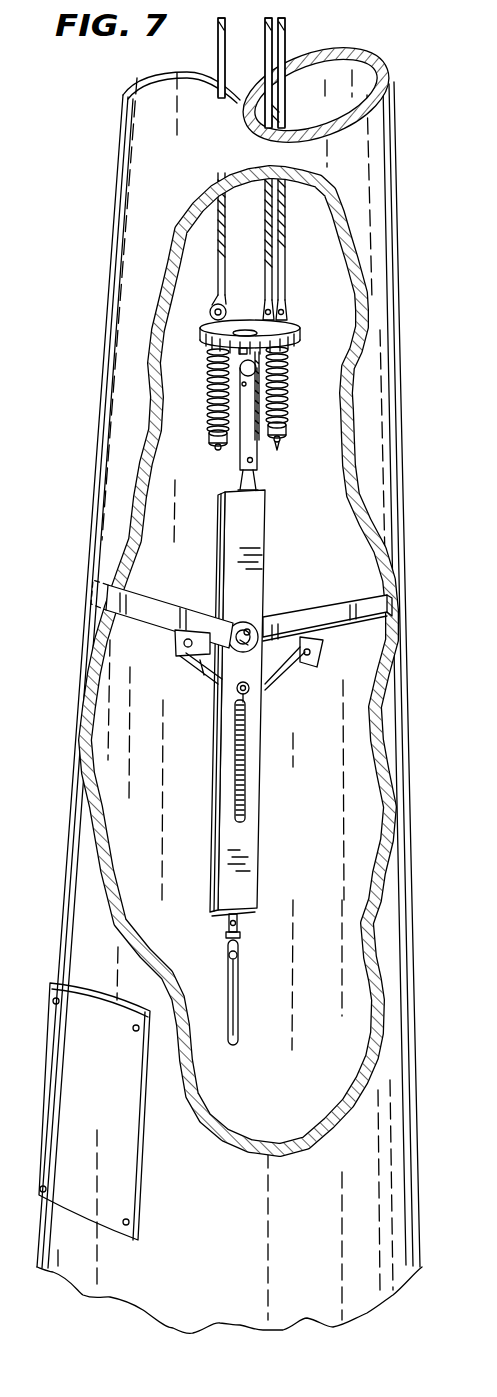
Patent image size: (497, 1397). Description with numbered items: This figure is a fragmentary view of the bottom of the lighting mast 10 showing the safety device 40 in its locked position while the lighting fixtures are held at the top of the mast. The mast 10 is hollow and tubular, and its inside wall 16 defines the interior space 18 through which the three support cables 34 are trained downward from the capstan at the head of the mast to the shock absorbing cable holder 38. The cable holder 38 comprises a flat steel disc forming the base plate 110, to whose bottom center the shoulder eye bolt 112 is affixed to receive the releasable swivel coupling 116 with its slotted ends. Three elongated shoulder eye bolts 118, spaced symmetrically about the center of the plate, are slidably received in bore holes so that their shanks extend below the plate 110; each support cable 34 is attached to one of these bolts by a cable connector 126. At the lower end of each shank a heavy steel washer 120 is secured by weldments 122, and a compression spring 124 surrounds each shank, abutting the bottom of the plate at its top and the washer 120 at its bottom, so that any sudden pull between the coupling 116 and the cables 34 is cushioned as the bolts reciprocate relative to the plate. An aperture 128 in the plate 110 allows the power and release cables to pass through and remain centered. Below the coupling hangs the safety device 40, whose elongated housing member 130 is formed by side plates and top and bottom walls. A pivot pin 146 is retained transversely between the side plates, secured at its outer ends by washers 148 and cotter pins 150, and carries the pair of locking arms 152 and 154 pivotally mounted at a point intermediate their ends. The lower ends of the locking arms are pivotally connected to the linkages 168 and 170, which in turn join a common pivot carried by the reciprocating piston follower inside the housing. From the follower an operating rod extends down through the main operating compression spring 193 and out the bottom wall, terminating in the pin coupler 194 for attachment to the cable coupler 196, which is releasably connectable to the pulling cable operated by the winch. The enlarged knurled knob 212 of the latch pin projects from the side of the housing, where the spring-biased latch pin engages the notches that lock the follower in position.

The mast 10 is at (400, 176).
The inside wall 16 is at (342, 70).
The interior space 18 is at (322, 260).
The cables 34 is at (287, 47).
The shock absorbing cable holder 38 is at (234, 378).
The safety device 40 is at (241, 767).
The base plate 110 is at (288, 358).
The shoulder eye bolt 112 is at (230, 370).
The releasable swivel coupling 116 is at (250, 445).
The elongated shoulder eye bolts 118 is at (288, 320).
The heavy steel washer 120 is at (290, 432).
The weldments 122 is at (283, 444).
The compression spring 124 is at (208, 408).
The cable connector 126 is at (220, 292).
The aperture 128 is at (213, 325).
The elongated housing member 130 is at (265, 513).
The pivot pin 146 is at (253, 630).
The washers 148 is at (233, 623).
The cotter pins 150 is at (248, 632).
The locking arm 152 is at (330, 607).
The locking arm 154 is at (133, 622).
The linkage 168 is at (212, 668).
The linkage 170 is at (287, 663).
The main operating compression spring 193 is at (238, 790).
The pin coupler 194 is at (240, 927).
The cable coupler 196 is at (240, 1007).
The knurled knob 212 is at (249, 692).